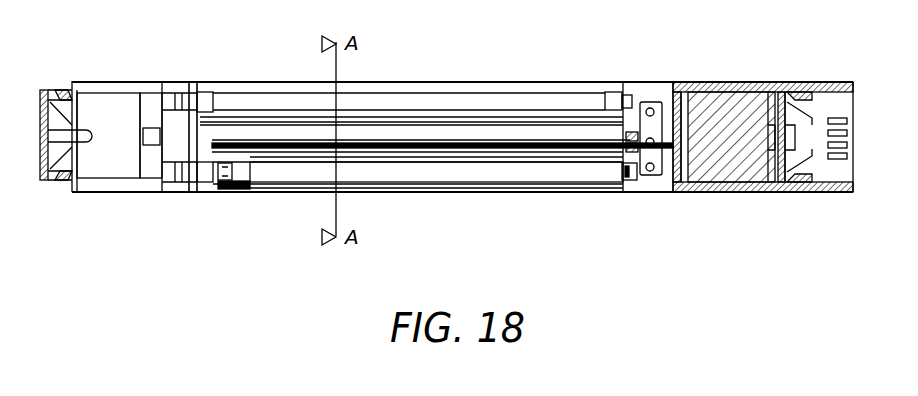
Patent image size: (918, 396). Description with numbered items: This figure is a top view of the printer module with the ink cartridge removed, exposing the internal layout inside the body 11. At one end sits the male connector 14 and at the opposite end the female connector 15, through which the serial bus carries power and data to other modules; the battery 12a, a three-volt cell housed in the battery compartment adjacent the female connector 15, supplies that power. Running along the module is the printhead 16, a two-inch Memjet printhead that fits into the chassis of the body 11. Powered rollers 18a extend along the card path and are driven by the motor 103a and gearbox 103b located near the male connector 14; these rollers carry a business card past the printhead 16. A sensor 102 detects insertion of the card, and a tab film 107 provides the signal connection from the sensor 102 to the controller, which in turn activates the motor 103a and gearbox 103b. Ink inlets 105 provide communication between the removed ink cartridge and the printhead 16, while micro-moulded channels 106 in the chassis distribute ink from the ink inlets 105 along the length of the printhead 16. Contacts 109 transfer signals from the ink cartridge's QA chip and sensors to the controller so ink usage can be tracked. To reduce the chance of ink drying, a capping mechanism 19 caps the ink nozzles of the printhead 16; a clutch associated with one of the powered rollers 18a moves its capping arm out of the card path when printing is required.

The body 11 is at (388, 81).
The battery 12a is at (740, 193).
The male connector 14 is at (45, 182).
The female connector 15 is at (805, 132).
The printhead 16 is at (383, 127).
The powered rollers 18a is at (607, 81).
The capping mechanism 19 is at (168, 150).
The sensor 102 is at (250, 190).
The motor 103a is at (100, 107).
The gearbox 103b is at (150, 107).
The ink inlets 105 is at (655, 101).
The micro-moulded channels 106 is at (615, 150).
The tab film 107 is at (230, 172).
The contacts 109 is at (635, 160).